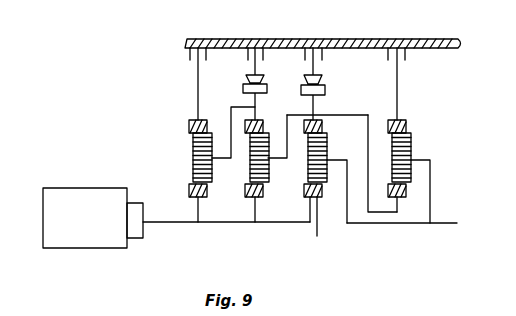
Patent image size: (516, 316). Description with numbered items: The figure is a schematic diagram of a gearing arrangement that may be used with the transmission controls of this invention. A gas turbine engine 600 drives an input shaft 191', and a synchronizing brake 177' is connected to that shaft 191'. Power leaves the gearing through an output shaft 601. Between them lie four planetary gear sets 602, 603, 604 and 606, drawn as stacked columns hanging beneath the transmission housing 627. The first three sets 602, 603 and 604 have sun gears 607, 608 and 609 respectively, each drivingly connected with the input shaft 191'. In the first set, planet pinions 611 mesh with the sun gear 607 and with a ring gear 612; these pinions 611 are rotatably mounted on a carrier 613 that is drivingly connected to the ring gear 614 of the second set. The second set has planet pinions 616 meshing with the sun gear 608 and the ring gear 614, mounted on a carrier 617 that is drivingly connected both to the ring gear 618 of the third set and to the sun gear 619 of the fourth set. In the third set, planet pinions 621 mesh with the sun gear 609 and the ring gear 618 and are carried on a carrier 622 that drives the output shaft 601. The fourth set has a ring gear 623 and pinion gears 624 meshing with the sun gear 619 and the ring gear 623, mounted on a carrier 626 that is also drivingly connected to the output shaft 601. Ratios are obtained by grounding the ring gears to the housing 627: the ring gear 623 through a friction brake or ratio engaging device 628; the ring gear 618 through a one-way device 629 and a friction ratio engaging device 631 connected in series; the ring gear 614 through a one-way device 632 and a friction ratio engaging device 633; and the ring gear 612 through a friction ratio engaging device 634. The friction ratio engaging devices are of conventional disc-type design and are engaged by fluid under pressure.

The gas turbine engine 600 is at (68, 248).
The output shaft 601 is at (409, 238).
The planetary gear set 602 is at (193, 152).
The planetary gear set 603 is at (241, 210).
The planetary gear set 604 is at (328, 212).
The planetary gear set 606 is at (426, 153).
The sun gear 607 is at (192, 190).
The sun gear 608 is at (277, 190).
The sun gear 609 is at (306, 220).
The planet pinions 611 is at (245, 184).
The ring gear 612 is at (189, 128).
The carrier 613 is at (224, 118).
The ring gear 614 is at (212, 168).
The planet pinions 616 is at (279, 165).
The carrier 617 is at (278, 110).
The ring gear 618 is at (321, 120).
The sun gear 619 is at (400, 168).
The planet pinions 621 is at (317, 153).
The carrier 622 is at (350, 172).
The ring gear 623 is at (398, 123).
The pinion gears 624 is at (398, 162).
The carrier 626 is at (413, 189).
The transmission housing 627 is at (430, 41).
The friction brake 628 is at (412, 66).
The one-way device 629 is at (326, 87).
The friction ratio engaging device 631 is at (340, 24).
The one-way device 632 is at (249, 76).
The friction ratio engaging device 633 is at (271, 54).
The friction ratio engaging device 634 is at (181, 66).
The synchronizing brake 177' is at (150, 211).
The input shaft 191' is at (226, 236).